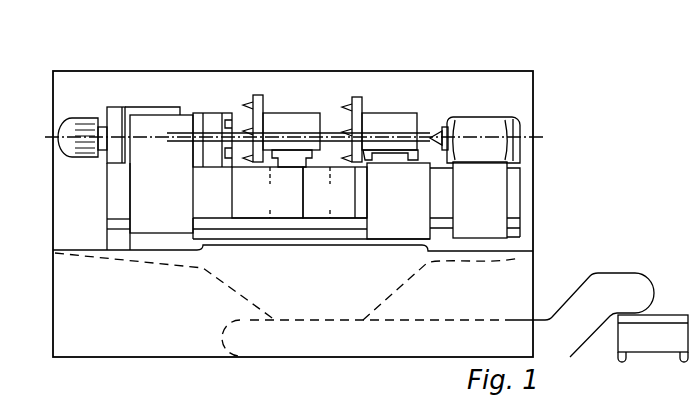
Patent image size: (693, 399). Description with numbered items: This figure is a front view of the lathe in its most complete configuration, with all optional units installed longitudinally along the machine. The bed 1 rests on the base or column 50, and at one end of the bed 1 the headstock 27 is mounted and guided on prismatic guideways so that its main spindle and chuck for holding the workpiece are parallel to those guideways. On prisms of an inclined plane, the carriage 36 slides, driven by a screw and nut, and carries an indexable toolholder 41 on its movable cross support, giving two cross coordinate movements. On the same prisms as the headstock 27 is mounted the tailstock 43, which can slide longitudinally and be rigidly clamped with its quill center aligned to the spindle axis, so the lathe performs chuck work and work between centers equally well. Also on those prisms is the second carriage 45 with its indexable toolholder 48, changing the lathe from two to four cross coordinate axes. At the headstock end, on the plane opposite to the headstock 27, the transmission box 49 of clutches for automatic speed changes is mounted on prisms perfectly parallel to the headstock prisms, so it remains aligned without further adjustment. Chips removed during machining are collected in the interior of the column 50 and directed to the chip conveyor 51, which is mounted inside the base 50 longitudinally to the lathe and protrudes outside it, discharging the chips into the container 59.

The bed 1 is at (517, 187).
The headstock 27 is at (150, 127).
The carriage 36 is at (293, 164).
The indexable toolholder 41 is at (284, 123).
The tailstock 43 is at (480, 127).
The second carriage 45 is at (383, 173).
The indexable toolholder 48 is at (380, 125).
The transmission box 49 is at (118, 116).
The base or column 50 is at (520, 272).
The chip conveyor 51 is at (618, 283).
The container 59 is at (657, 337).